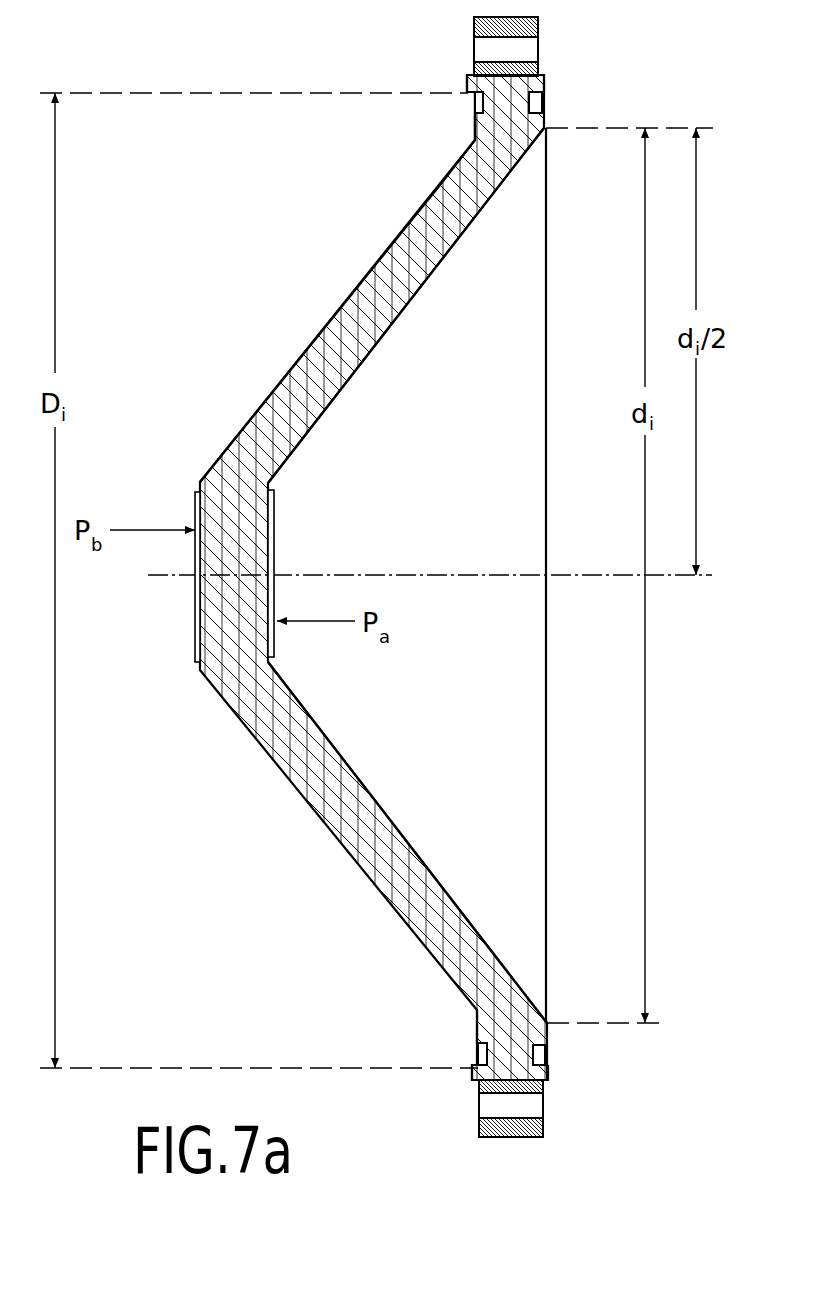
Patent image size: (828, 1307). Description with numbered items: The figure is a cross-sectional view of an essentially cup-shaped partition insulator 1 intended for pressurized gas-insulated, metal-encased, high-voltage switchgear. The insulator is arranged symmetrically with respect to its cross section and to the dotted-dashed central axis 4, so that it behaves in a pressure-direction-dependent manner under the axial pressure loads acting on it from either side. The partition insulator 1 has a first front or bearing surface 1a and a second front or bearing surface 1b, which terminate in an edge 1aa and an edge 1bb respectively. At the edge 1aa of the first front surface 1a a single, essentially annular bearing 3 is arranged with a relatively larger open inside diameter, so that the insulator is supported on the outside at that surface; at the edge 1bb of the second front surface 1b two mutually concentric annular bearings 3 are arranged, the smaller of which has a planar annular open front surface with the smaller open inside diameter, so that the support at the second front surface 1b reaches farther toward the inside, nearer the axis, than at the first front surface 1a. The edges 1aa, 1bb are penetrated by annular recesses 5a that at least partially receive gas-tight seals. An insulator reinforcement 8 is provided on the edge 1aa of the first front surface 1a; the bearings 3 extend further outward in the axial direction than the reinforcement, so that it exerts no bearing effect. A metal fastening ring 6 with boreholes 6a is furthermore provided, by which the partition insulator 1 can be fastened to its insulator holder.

The partition insulator 1 is at (340, 810).
The first front surface 1a is at (307, 347).
The edge of the first front surface 1aa is at (463, 148).
The second front surface 1b is at (359, 780).
The edge of the second front surface 1bb is at (505, 177).
The bearing 3 is at (467, 80).
The central axis 4 is at (158, 575).
The annular recess 5a is at (478, 100).
The fastening ring 6 is at (477, 27).
The borehole 6a is at (518, 45).
The insulator reinforcement 8 is at (474, 125).